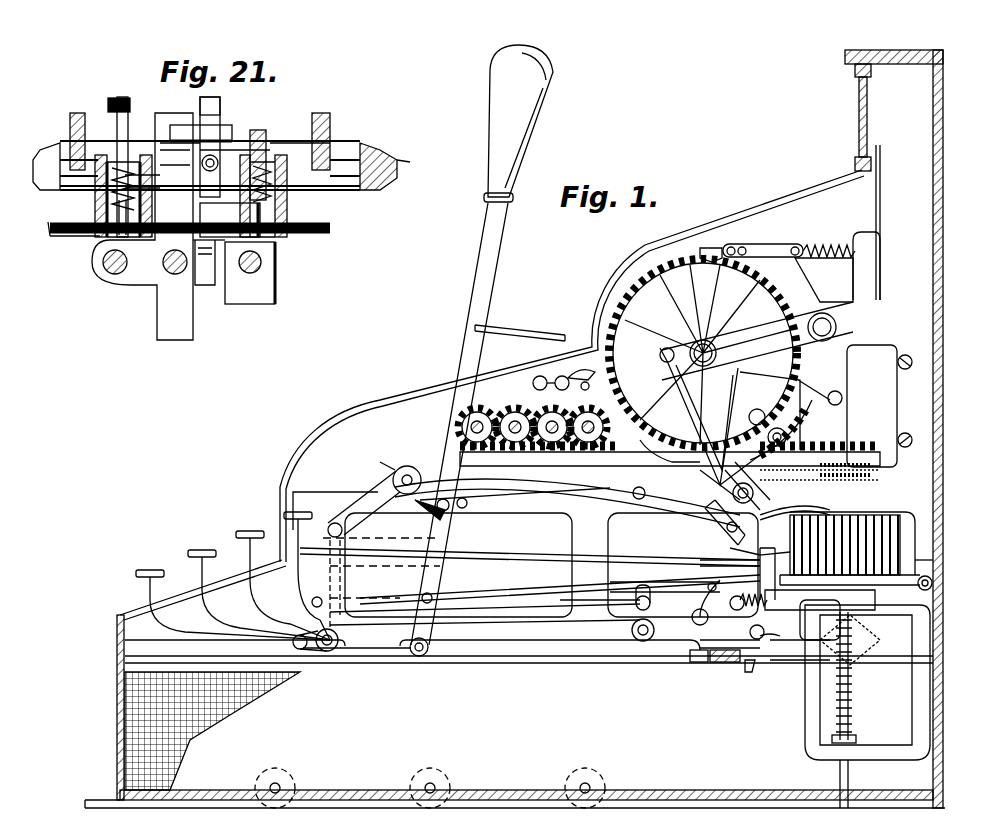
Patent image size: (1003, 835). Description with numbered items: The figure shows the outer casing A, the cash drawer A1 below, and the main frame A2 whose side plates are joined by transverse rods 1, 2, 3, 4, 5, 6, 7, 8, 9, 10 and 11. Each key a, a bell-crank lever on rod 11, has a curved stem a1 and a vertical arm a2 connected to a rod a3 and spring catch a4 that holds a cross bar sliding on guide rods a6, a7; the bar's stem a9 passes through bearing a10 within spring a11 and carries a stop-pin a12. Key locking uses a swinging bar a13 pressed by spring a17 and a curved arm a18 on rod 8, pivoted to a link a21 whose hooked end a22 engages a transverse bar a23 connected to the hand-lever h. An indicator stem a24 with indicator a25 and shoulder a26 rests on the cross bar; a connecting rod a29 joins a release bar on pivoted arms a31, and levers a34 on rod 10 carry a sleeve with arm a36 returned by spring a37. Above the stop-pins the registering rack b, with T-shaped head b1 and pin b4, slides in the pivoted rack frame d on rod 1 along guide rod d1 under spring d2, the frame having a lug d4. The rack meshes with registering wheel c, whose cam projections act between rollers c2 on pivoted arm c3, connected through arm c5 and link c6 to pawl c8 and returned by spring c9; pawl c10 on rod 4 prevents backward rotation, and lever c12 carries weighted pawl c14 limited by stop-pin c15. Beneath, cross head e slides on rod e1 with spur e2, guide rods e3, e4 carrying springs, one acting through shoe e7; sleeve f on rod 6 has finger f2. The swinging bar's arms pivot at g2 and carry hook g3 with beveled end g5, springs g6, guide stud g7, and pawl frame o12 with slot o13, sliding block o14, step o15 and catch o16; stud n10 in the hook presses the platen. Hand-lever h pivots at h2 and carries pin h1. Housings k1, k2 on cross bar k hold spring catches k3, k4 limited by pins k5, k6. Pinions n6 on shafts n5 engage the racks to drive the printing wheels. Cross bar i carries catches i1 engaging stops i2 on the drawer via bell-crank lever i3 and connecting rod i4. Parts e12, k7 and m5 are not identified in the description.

In FIG. 1, the outer casing A is at (300, 462).
In FIG. 1, the cash drawer A1 is at (430, 758).
In FIG. 1, the main frame A2 is at (545, 592).
In FIG. 1, the key a is at (233, 593).
In FIG. 1, the stem a1 is at (251, 576).
In FIG. 1, the vertical arm a2 is at (330, 550).
In FIG. 1, the rod or wire a3 is at (530, 575).
In FIG. 1, the spring catch a4 is at (778, 548).
In FIG. 1, the guide rod a6 is at (746, 552).
In FIG. 1, the guide rod a7 is at (890, 575).
In FIG. 1, the rod or stem a9 is at (850, 782).
In FIG. 1, the bearing a10 is at (850, 740).
In FIG. 1, the spring a11 is at (852, 690).
In FIG. 1, the stop-pin a12 is at (870, 540).
In FIG. 1, the swinging bar a13 is at (820, 598).
In FIG. 1, the spring a17 is at (748, 612).
In FIG. 1, the curved arm a18 is at (715, 595).
In FIG. 1, the link a21 is at (665, 583).
In FIG. 1, the hook-shaped end a22 is at (381, 568).
In FIG. 1, the transverse bar a23 is at (485, 612).
In FIG. 1, the indicator stem a24 is at (880, 262).
In FIG. 1, the indicator a25 is at (882, 186).
In FIG. 1, the projecting shoulder a26 is at (918, 565).
In FIG. 1, the connecting rod a29 is at (510, 612).
In FIG. 1, the pivoted arm a31 is at (295, 633).
In FIG. 1, the pivoted lever a34 is at (304, 598).
In FIG. 1, the upwardly projecting arm a36 is at (800, 645).
In FIG. 1, the spring a37 is at (851, 640).
In FIG. 21, the registering rack b is at (230, 128).
In FIG. 1, the T-shaped head b1 is at (880, 468).
In FIG. 21, the pin b4 is at (150, 180).
In FIG. 1, the registering wheel c is at (625, 300).
In FIG. 1, the roller c2 is at (776, 414).
In FIG. 1, the pivoted arm c3 is at (784, 429).
In FIG. 1, the projecting arm c5 is at (806, 270).
In FIG. 1, the link c6 is at (763, 250).
In FIG. 1, the pivoted pawl c8 is at (706, 247).
In FIG. 1, the spring c9 is at (829, 241).
In FIG. 1, the pivoted pawl c10 is at (825, 380).
In FIG. 1, the pivoted lever c12 is at (670, 454).
In FIG. 1, the weighted pawl c14 is at (560, 336).
In FIG. 1, the stop-pin c15 is at (570, 372).
In FIG. 21, the rack frame d is at (60, 138).
In FIG. 1, the rack frame d is at (670, 460).
In FIG. 21, the guide rod d1 is at (230, 150).
In FIG. 21, the spring d2 is at (225, 160).
In FIG. 21, the projecting lug d4 is at (95, 117).
In FIG. 21, the cross head e is at (158, 226).
In FIG. 21, the supporting rod e1 is at (170, 268).
In FIG. 21, the spur e2 is at (100, 112).
In FIG. 21, the guide rod e3 is at (275, 280).
In FIG. 21, the guide rod e4 is at (110, 268).
In FIG. 21, the shoe e7 is at (262, 262).
In FIG. 21, the arm e12 is at (212, 260).
In FIG. 1, the sleeve f is at (755, 494).
In FIG. 1, the downwardly projecting finger f2 is at (752, 494).
In FIG. 1, the pivot g2 is at (662, 352).
In FIG. 1, the hook g3 is at (608, 496).
In FIG. 1, the beveled end g5 is at (415, 506).
In FIG. 1, the spring g6 is at (820, 470).
In FIG. 1, the projecting stud g7 is at (567, 503).
In FIG. 1, the hand-lever h is at (493, 278).
In FIG. 1, the stud or pin h1 is at (370, 500).
In FIG. 1, the pivot h2 is at (410, 655).
In FIG. 1, the cross bar i is at (720, 662).
In FIG. 1, the reciprocating catch i1 is at (742, 665).
In FIG. 1, the engaging stop i2 is at (752, 675).
In FIG. 1, the bell-crank lever i3 is at (652, 606).
In FIG. 1, the connecting rod i4 is at (565, 605).
In FIG. 21, the cross bar k is at (45, 228).
In FIG. 21, the housing k1 is at (95, 205).
In FIG. 21, the housing k2 is at (287, 208).
In FIG. 21, the spring actuated catch k3 is at (95, 238).
In FIG. 21, the spring catch k4 is at (230, 228).
In FIG. 21, the cross pin k5 is at (120, 110).
In FIG. 21, the pin k6 is at (180, 125).
In FIG. 21, the pin k7 is at (262, 135).
In FIG. 1, the bar m5 is at (520, 324).
In FIG. 1, the shaft n5 is at (533, 436).
In FIG. 1, the pinion n6 is at (532, 422).
In FIG. 1, the stud n10 is at (621, 492).
In FIG. 1, the pawl supporting frame o12 is at (700, 530).
In FIG. 1, the slotted opening o13 is at (690, 470).
In FIG. 1, the sliding block o14 is at (728, 545).
In FIG. 1, the step o15 is at (815, 515).
In FIG. 1, the pivoted catch o16 is at (799, 506).
In FIG. 21, the frame rod 1 is at (400, 165).
In FIG. 1, the frame rod 1 is at (405, 478).
In FIG. 1, the frame rod 2 is at (716, 350).
In FIG. 1, the frame rod 3 is at (836, 327).
In FIG. 1, the frame rod 4 is at (843, 398).
In FIG. 1, the frame rod 5 is at (668, 395).
In FIG. 1, the frame rod 6 is at (790, 411).
In FIG. 1, the frame rod 7 is at (419, 657).
In FIG. 1, the frame rod 8 is at (655, 630).
In FIG. 1, the frame rod 9 is at (775, 650).
In FIG. 1, the frame rod 10 is at (790, 655).
In FIG. 1, the frame rod 11 is at (322, 652).